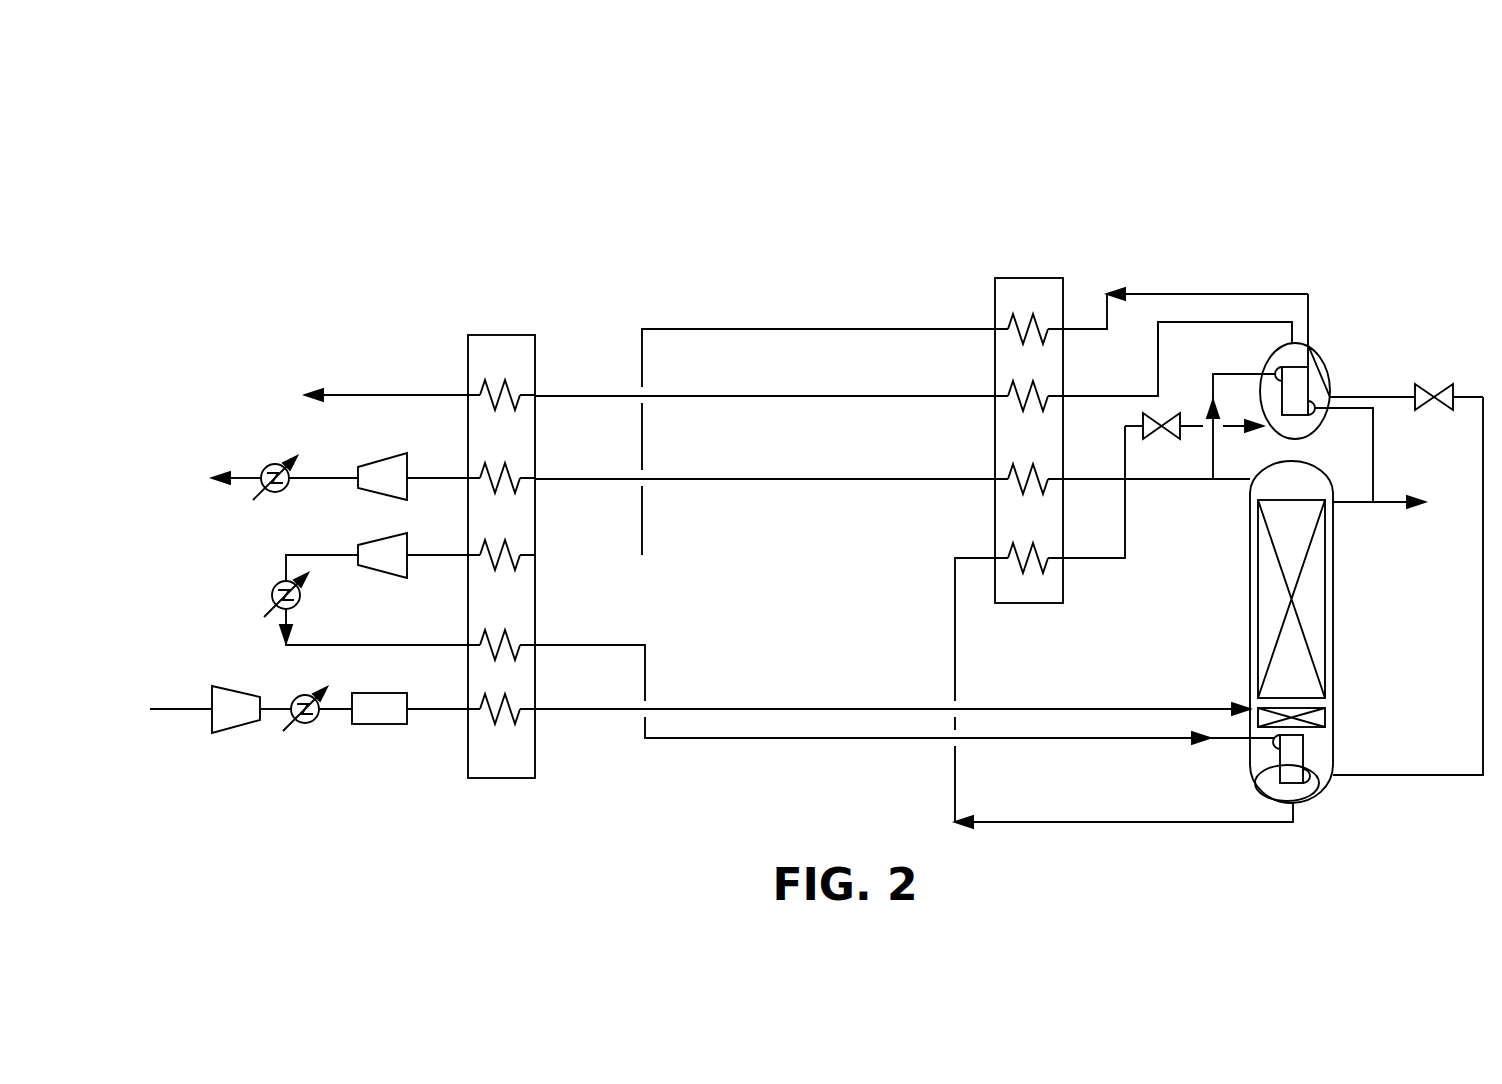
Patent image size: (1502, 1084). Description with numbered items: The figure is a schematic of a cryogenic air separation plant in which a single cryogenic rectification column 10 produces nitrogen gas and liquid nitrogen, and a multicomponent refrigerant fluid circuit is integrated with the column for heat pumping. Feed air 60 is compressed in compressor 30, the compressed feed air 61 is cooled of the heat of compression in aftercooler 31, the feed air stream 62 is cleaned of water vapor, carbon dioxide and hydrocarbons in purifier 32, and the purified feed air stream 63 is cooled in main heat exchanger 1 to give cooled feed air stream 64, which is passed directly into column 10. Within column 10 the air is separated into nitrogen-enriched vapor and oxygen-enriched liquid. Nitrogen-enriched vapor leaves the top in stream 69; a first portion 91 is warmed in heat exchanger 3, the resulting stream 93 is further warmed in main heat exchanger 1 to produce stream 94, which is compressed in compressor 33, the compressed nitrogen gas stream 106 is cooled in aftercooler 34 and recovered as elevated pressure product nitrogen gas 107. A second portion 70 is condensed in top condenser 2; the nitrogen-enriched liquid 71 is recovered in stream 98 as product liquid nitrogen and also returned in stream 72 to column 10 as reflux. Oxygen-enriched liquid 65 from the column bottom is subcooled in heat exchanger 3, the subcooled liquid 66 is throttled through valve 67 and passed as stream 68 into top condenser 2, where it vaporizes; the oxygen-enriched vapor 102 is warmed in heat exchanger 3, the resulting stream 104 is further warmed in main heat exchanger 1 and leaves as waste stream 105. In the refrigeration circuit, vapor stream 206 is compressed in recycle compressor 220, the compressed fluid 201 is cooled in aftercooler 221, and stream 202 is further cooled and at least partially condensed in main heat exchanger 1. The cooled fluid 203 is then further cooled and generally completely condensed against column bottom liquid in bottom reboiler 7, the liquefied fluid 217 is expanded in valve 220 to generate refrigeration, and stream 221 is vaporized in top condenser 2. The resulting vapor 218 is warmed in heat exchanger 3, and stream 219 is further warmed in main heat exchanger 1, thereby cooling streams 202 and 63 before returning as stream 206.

The main heat exchanger 1 is at (500, 335).
The top condenser 2 is at (1322, 352).
The heat exchanger 3 is at (1028, 278).
The bottom reboiler 7 is at (1262, 768).
The cryogenic rectification column 10 is at (1333, 660).
The compressor 30 is at (237, 734).
The aftercooler 31 is at (298, 694).
The purifier 32 is at (372, 692).
The compressor 33 is at (370, 467).
The aftercooler 34 is at (265, 464).
The feed air 60 is at (175, 711).
The compressed feed air 61 is at (275, 711).
The feed air stream 62 is at (340, 711).
The purified feed air stream 63 is at (437, 711).
The cooled feed air stream 64 is at (755, 709).
The oxygen-enriched liquid stream 65 is at (1035, 822).
The subcooled oxygen-enriched liquid 66 is at (1070, 562).
The valve 67 is at (1158, 440).
The stream 68 is at (1227, 432).
The nitrogen-enriched vapor stream 69 is at (1230, 483).
The second portion of nitrogen-enriched vapor 70 is at (1227, 372).
The nitrogen-enriched liquid stream 71 is at (1373, 452).
The nitrogen-enriched liquid reflux stream 72 is at (1345, 504).
The first portion of nitrogen-enriched vapor 91 is at (1122, 462).
The stream 93 is at (788, 479).
The product nitrogen gas stream 94 is at (430, 478).
The product liquid nitrogen stream 98 is at (1400, 502).
The oxygen-enriched vapor stream 102 is at (1157, 372).
The stream 104 is at (805, 396).
The waste stream 105 is at (405, 395).
The compressed nitrogen gas stream 106 is at (300, 476).
The elevated pressure product nitrogen gas stream 107 is at (245, 477).
The compressed multicomponent refrigerant fluid 201 is at (285, 555).
The multicomponent refrigerant fluid stream 202 is at (330, 645).
The cooled compressed multicomponent refrigerant fluid 203 is at (625, 645).
The warmed multicomponent refrigerant fluid vapor stream 206 is at (430, 557).
The liquefied multicomponent fluid stream 217 is at (1395, 777).
The multicomponent refrigerant fluid stream 218 is at (1205, 294).
The stream 219 is at (752, 329).
The recycle compressor / valve 220 is at (360, 538).
The aftercooler / stream 221 is at (272, 590).